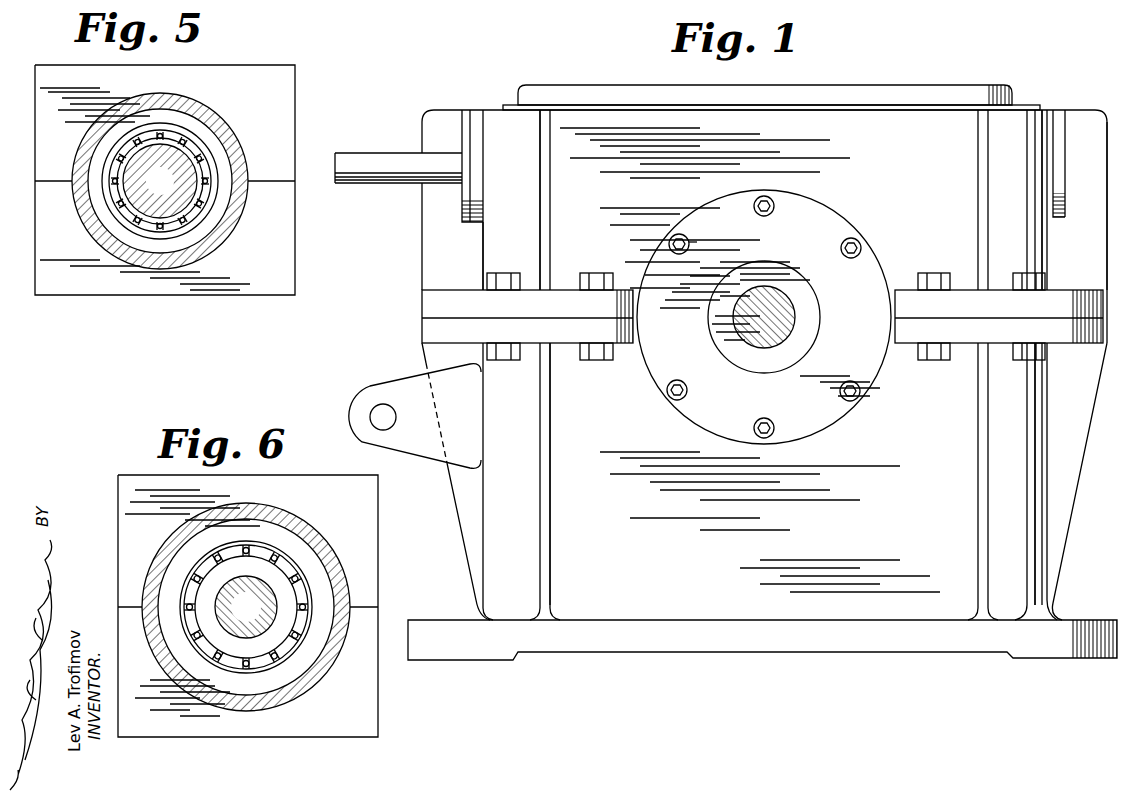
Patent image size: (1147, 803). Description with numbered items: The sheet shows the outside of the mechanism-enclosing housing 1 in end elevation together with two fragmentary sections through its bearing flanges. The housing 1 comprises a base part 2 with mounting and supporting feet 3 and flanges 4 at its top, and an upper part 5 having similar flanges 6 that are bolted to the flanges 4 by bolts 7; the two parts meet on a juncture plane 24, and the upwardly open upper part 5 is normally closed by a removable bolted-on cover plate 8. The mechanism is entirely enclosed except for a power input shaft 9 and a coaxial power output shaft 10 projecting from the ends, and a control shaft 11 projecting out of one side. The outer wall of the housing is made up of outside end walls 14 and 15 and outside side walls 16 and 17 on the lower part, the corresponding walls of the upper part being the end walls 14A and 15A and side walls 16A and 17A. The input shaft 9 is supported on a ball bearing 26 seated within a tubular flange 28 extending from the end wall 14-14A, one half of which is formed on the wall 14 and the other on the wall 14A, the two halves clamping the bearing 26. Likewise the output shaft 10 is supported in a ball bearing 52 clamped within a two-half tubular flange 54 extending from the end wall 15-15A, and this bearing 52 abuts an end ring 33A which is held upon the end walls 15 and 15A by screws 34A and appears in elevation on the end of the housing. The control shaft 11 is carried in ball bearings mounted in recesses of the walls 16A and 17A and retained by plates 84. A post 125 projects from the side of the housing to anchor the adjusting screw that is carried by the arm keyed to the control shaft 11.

In FIG. 1, the housing 1 is at (764, 351).
In FIG. 1, the base part 2 is at (1077, 430).
In FIG. 1, the mounting and supporting feet 3 is at (434, 632).
In FIG. 1, the flanges 4 is at (451, 330).
In FIG. 1, the upper part 5 is at (1100, 213).
In FIG. 1, the flanges 6 is at (451, 298).
In FIG. 1, the bolts 7 is at (598, 280).
In FIG. 1, the cover plate 8 is at (855, 93).
In FIG. 5, the power input shaft 9 is at (160, 181).
In FIG. 6, the power output shaft 10 is at (246, 607).
In FIG. 1, the power output shaft 10 is at (793, 334).
In FIG. 1, the control shaft 11 is at (378, 170).
In FIG. 5, the outside end wall 14 is at (165, 180).
In FIG. 5, the outside end wall of upper part 14A is at (165, 123).
In FIG. 6, the outside end wall 15 is at (248, 606).
In FIG. 1, the outside end wall 15 is at (583, 474).
In FIG. 6, the outside end wall of upper part 15A is at (248, 541).
In FIG. 1, the outside end wall of upper part 15A is at (568, 200).
In FIG. 1, the outside side wall 16 is at (483, 410).
In FIG. 1, the outside side wall of upper part 16A is at (483, 239).
In FIG. 1, the outside side wall 17 is at (1048, 395).
In FIG. 1, the outside side wall of upper part 17A is at (1047, 246).
In FIG. 5, the juncture plane 24 is at (288, 167).
In FIG. 6, the juncture plane 24 is at (367, 604).
In FIG. 5, the ball bearing 26 is at (222, 200).
In FIG. 5, the tubular flange 28 is at (235, 140).
In FIG. 1, the end ring 33A is at (818, 418).
In FIG. 1, the screws 34A is at (672, 397).
In FIG. 6, the ball bearing 52 is at (316, 639).
In FIG. 6, the tubular flange 54 is at (320, 548).
In FIG. 1, the plates 84 is at (467, 122).
In FIG. 1, the post 125 is at (408, 446).